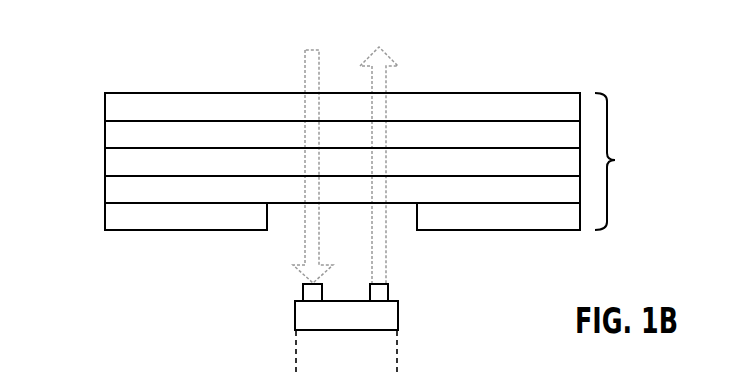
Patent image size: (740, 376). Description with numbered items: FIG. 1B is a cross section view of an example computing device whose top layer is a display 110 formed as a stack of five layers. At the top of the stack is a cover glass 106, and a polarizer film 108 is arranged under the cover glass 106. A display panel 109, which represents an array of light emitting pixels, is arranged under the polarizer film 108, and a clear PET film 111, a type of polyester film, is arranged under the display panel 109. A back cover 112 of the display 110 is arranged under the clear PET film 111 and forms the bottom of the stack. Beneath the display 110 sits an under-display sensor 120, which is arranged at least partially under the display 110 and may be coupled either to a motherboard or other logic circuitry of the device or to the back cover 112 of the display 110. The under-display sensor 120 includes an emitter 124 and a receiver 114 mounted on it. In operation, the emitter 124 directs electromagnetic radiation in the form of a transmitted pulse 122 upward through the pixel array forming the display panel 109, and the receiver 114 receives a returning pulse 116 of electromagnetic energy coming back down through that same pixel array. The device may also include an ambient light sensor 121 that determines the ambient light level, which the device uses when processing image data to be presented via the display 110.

The cover glass 106 is at (105, 97).
The polarizer film 108 is at (105, 124).
The display panel 109 is at (105, 151).
The clear PET film 111 is at (105, 179).
The back cover 112 is at (105, 206).
The display 110 is at (628, 161).
The receiver 114 is at (303, 293).
The returning pulse 116 is at (314, 56).
The under-display sensor 120 is at (399, 321).
The ambient light sensor 121 is at (462, 375).
The transmitted pulse 122 is at (378, 56).
The emitter 124 is at (389, 289).